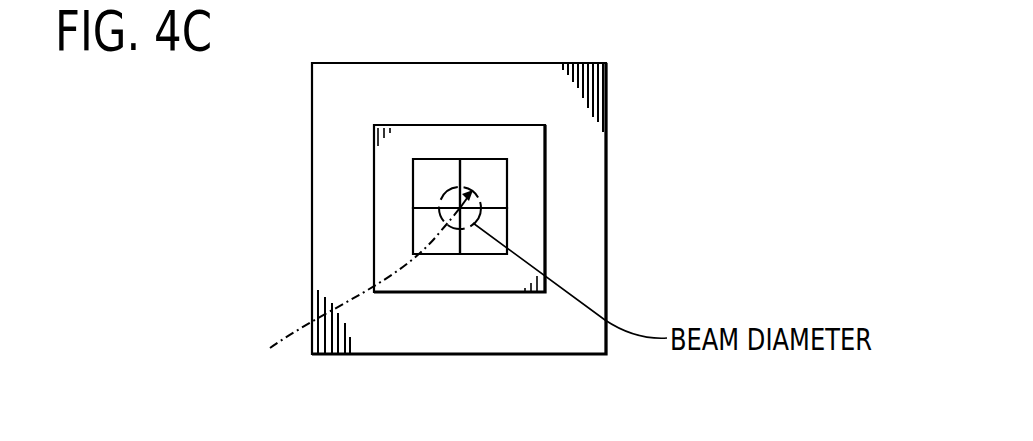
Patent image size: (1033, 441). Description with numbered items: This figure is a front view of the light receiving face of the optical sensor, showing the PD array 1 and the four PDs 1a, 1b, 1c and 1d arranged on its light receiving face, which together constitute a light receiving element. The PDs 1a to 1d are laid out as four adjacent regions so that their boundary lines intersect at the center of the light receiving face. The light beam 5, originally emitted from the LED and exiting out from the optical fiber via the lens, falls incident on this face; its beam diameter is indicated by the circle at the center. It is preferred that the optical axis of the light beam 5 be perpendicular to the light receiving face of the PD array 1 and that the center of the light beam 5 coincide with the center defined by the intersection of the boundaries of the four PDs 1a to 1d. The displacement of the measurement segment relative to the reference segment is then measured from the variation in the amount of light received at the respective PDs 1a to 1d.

The PD array 1 is at (532, 243).
The PD 1a is at (498, 175).
The PD 1b is at (422, 180).
The PD 1c is at (412, 226).
The PD 1d is at (499, 223).
The light beam 5 is at (361, 279).